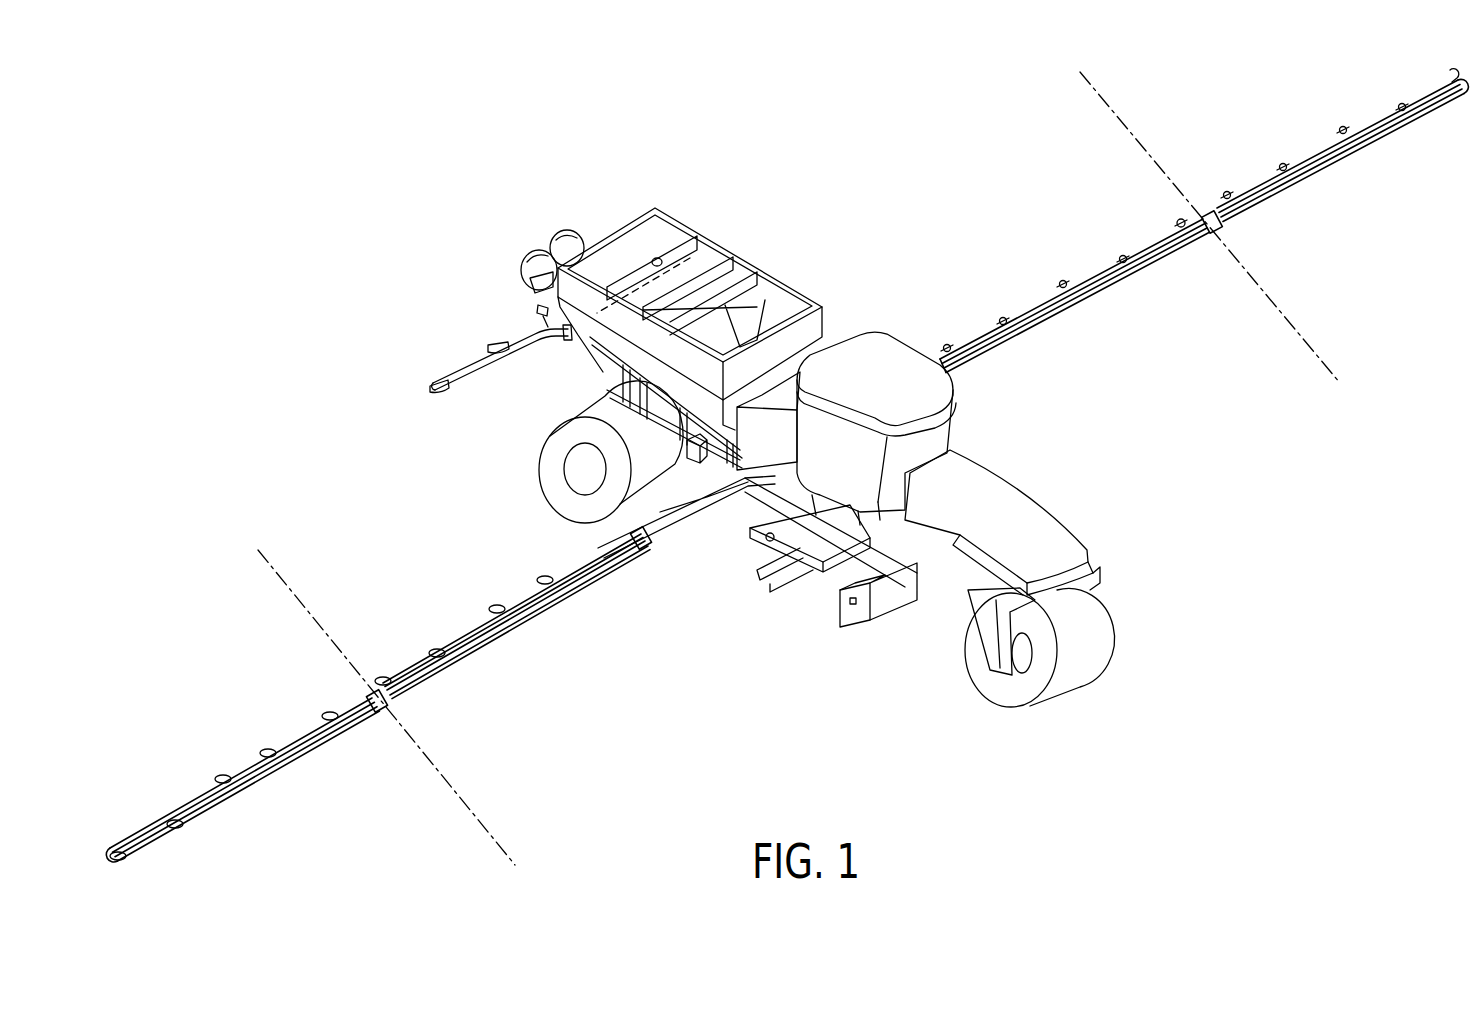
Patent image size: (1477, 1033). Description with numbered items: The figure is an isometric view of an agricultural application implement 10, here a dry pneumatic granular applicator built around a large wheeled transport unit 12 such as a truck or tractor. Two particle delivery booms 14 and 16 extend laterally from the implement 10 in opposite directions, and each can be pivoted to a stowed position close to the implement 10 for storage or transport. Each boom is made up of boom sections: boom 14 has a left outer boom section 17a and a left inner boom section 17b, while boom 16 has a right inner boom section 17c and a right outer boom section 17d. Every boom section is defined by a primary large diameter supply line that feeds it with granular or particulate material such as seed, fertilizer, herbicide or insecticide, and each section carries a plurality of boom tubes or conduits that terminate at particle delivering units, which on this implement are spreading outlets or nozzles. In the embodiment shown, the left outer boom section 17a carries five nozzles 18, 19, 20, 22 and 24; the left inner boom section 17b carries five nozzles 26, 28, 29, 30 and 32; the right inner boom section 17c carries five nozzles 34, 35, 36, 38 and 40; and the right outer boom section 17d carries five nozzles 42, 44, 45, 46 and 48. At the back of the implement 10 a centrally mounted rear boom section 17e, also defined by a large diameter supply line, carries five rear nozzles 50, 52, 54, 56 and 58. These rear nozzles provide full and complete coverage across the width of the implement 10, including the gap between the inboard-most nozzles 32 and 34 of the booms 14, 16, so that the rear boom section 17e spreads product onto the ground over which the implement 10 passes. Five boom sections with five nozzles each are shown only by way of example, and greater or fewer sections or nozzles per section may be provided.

The agricultural application implement 10 is at (838, 662).
The wheeled transport unit 12 is at (768, 602).
The particle delivery boom 14 is at (1204, 240).
The particle delivery boom 16 is at (440, 678).
The left outer boom section 17a is at (1370, 264).
The left inner boom section 17b is at (1190, 370).
The right inner boom section 17c is at (597, 718).
The right outer boom section 17d is at (362, 786).
The rear boom section 17e is at (385, 345).
The nozzle 18 is at (1452, 72).
The nozzle 19 is at (1400, 105).
The nozzle 20 is at (1340, 130).
The nozzle 22 is at (1282, 166).
The nozzle 24 is at (1226, 195).
The nozzle 26 is at (1182, 220).
The nozzle 28 is at (1122, 258).
The nozzle 29 is at (1062, 282).
The nozzle 30 is at (1002, 319).
The nozzle 32 is at (946, 346).
The nozzle 34 is at (585, 528).
The nozzle 35 is at (545, 578).
The nozzle 36 is at (497, 605).
The nozzle 38 is at (437, 650).
The nozzle 40 is at (383, 678).
The nozzle 42 is at (330, 713).
The nozzle 44 is at (268, 750).
The nozzle 45 is at (223, 776).
The nozzle 46 is at (175, 821).
The nozzle 48 is at (114, 850).
The rear nozzle 50 is at (657, 260).
The rear nozzle 52 is at (655, 262).
The rear nozzle 54 is at (538, 308).
The rear nozzle 56 is at (490, 343).
The rear nozzle 58 is at (432, 383).